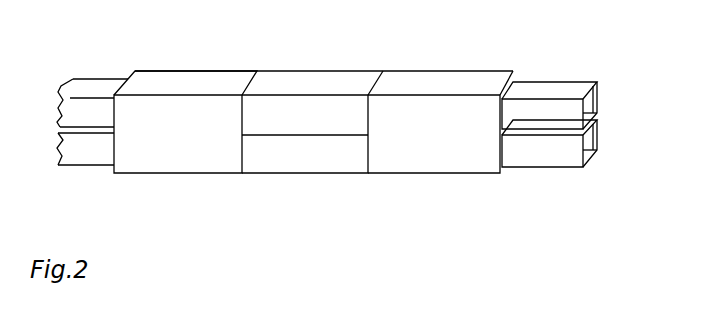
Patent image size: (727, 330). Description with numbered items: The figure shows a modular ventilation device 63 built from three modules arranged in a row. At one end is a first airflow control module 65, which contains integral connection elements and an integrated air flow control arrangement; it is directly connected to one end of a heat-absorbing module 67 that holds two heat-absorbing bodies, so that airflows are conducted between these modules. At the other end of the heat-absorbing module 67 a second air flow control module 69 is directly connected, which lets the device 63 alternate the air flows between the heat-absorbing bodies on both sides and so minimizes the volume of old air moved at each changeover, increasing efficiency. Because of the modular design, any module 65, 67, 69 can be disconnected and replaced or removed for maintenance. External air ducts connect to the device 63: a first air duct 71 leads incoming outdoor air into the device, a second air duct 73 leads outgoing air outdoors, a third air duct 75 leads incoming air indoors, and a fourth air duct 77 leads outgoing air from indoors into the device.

The ventilation device 63 is at (182, 155).
The first airflow control module 65 is at (183, 110).
The heat-absorbing module 67 is at (292, 162).
The second air flow control module 69 is at (428, 160).
The first air duct 71 is at (90, 88).
The second air duct 73 is at (82, 153).
The third air duct 75 is at (543, 110).
The fourth air duct 77 is at (548, 155).